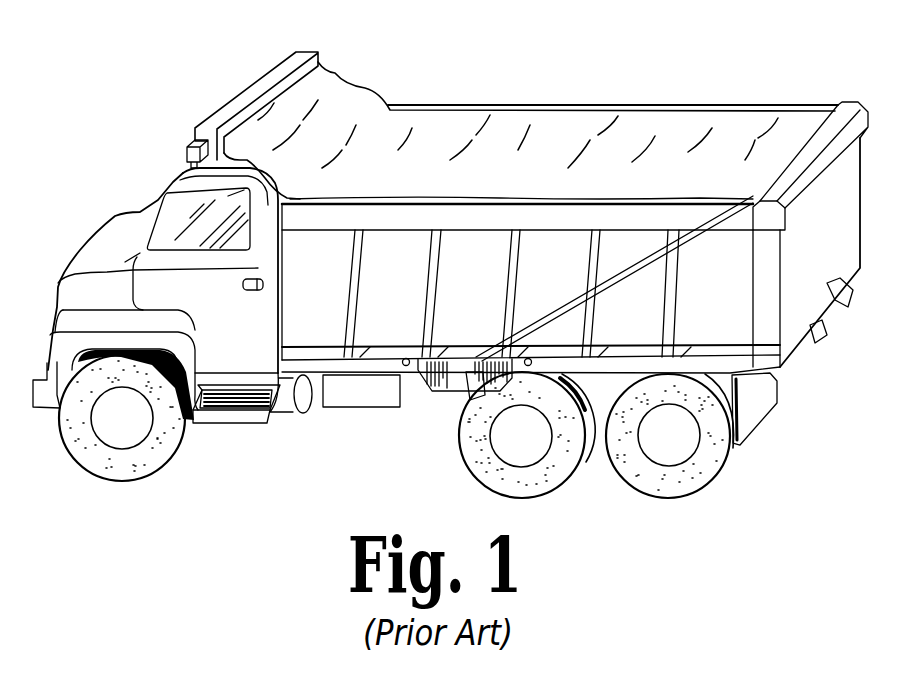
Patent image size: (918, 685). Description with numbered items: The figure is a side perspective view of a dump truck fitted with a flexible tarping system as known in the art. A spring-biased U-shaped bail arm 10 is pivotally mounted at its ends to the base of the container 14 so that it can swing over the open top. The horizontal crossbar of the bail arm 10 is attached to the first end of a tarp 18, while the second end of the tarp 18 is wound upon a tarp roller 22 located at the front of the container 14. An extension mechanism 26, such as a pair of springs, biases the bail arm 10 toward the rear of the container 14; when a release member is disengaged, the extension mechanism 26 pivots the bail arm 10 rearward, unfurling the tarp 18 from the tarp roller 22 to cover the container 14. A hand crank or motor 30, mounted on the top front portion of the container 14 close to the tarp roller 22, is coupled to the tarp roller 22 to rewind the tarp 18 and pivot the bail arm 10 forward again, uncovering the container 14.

The U-shaped bail arm 10 is at (450, 262).
The container 14 is at (485, 242).
The tarp 18 is at (517, 147).
The tarp roller 22 is at (210, 97).
The extension mechanism 26 is at (480, 357).
The hand crank or motor 30 is at (177, 155).